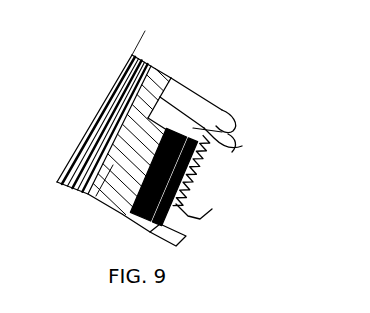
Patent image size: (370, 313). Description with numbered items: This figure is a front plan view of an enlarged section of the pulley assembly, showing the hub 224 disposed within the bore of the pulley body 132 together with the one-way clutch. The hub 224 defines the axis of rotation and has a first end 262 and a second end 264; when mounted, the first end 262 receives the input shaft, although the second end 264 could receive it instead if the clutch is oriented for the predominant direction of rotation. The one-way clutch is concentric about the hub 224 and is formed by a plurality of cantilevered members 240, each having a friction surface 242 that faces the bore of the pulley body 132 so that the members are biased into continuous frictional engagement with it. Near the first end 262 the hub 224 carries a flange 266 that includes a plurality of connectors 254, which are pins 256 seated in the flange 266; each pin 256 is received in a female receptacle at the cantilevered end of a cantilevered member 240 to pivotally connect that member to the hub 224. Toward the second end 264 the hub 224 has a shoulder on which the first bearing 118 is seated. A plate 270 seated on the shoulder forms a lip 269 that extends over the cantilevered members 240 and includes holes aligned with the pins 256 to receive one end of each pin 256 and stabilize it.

The first bearing 118 is at (185, 106).
The pulley body 132 is at (238, 153).
The hub 224 is at (78, 187).
The cantilevered member 240 is at (193, 167).
The friction surface 242 is at (186, 212).
The connector 254 is at (236, 122).
The pin 256 is at (195, 188).
The first end 262 is at (111, 211).
The second end 264 is at (163, 84).
The flange 266 is at (183, 238).
The lip 269 is at (232, 138).
The plate 270 is at (118, 107).